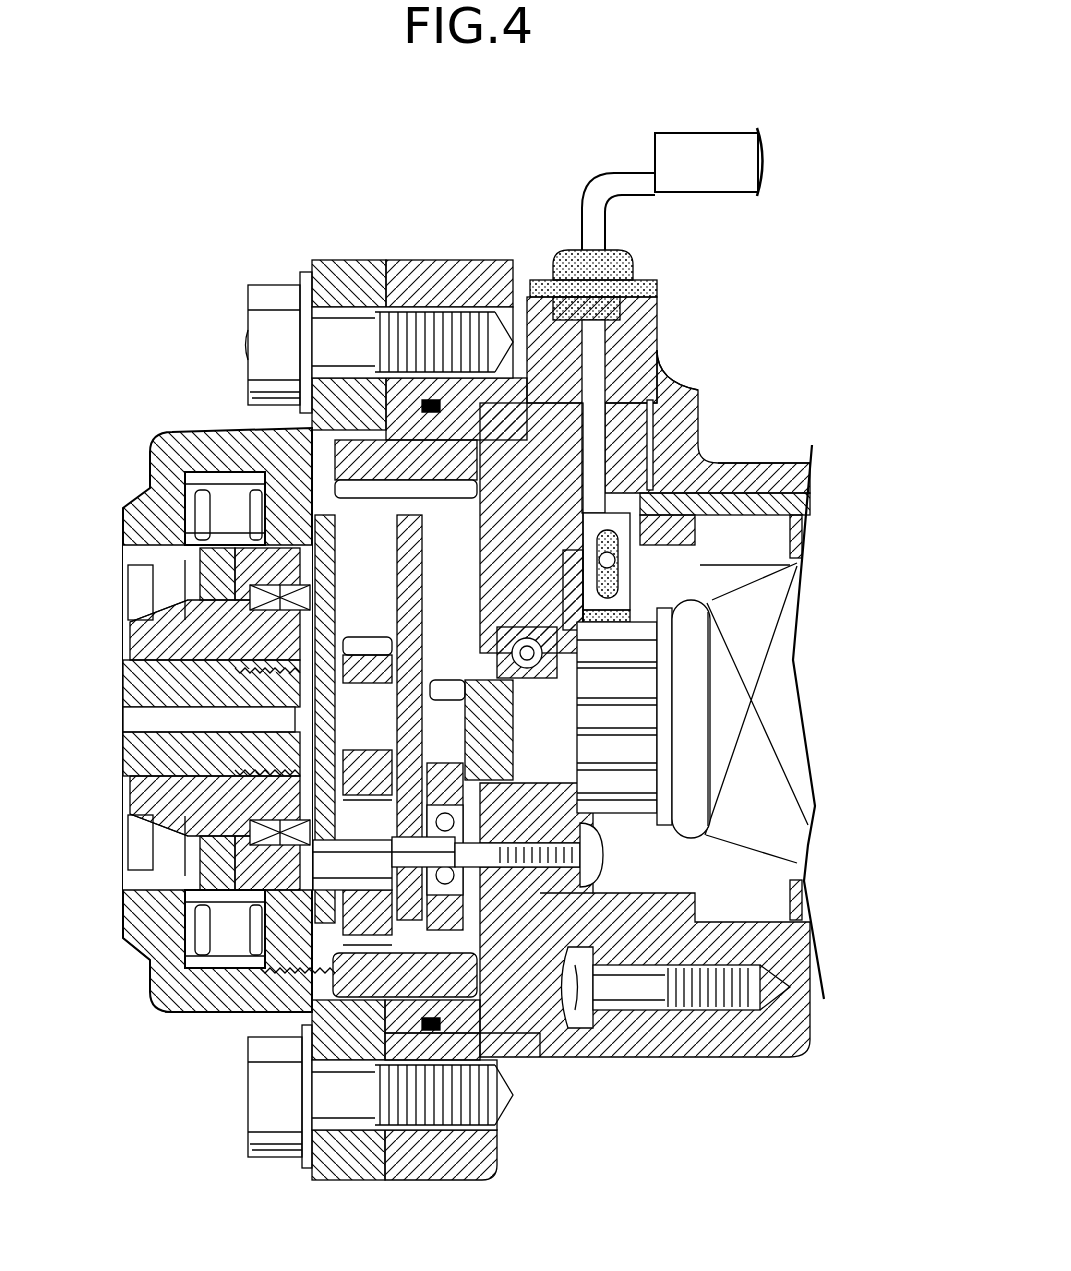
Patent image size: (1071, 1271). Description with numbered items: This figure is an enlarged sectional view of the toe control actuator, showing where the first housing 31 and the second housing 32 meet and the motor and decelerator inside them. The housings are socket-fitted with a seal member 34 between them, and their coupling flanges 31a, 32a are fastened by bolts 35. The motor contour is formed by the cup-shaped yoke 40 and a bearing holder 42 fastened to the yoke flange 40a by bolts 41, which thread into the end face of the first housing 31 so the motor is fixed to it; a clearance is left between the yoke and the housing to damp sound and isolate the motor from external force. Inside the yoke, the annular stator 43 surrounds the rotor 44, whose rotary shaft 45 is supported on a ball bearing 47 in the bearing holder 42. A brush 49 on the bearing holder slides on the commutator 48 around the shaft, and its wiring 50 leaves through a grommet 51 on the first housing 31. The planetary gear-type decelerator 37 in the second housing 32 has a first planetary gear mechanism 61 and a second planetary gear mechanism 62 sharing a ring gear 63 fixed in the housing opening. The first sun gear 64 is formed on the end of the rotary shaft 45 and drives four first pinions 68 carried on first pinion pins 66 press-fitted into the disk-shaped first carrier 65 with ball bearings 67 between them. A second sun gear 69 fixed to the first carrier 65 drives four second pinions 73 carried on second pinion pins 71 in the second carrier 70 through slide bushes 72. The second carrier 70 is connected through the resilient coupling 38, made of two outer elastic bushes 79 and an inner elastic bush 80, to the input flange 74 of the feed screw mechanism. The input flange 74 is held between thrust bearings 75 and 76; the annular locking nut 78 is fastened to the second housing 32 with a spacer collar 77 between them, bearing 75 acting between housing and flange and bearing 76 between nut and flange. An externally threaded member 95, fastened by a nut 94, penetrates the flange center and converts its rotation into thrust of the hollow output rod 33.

The first housing 31 is at (765, 455).
The coupling flange 31a is at (430, 262).
The second housing 32 is at (150, 462).
The coupling flange 32a is at (354, 288).
The output rod 33 is at (165, 875).
The seal member 34 is at (437, 262).
The bolts 35 is at (278, 292).
The planetary gear-type decelerator 37 is at (498, 1030).
The coupling 38 is at (238, 470).
The yoke 40 is at (740, 490).
The flange 40a is at (660, 415).
The bolts 41 is at (630, 1010).
The bearing holder 42 is at (537, 970).
The stator 43 is at (790, 535).
The rotor 44 is at (795, 598).
The rotary shaft 45 is at (552, 727).
The ball bearing 47 is at (520, 640).
The commutator 48 is at (635, 805).
The brush 49 is at (630, 625).
The wiring 50 is at (586, 200).
The grommet 51 is at (620, 262).
The first planetary gear mechanism 61 is at (468, 910).
The second planetary gear mechanism 62 is at (370, 990).
The ring gear 63 is at (430, 492).
The first sun gear 64 is at (448, 690).
The first carrier 65 is at (420, 592).
The first pinion pins 66 is at (520, 855).
The ball bearings 67 is at (455, 860).
The first pinions 68 is at (490, 780).
The second sun gear 69 is at (362, 645).
The second carrier 70 is at (322, 565).
The second pinion pins 71 is at (368, 874).
The slide bushes 72 is at (365, 790).
The second pinions 73 is at (300, 1010).
The input flange 74 is at (200, 865).
The thrust bearing 75 is at (195, 515).
The thrust bearing 76 is at (351, 713).
The spacer collar 77 is at (210, 1010).
The locking nut 78 is at (300, 1015).
The outer elastic bushes 79 is at (265, 598).
The inner elastic bush 80 is at (250, 600).
The nut 94 is at (230, 760).
The externally threaded member 95 is at (230, 720).